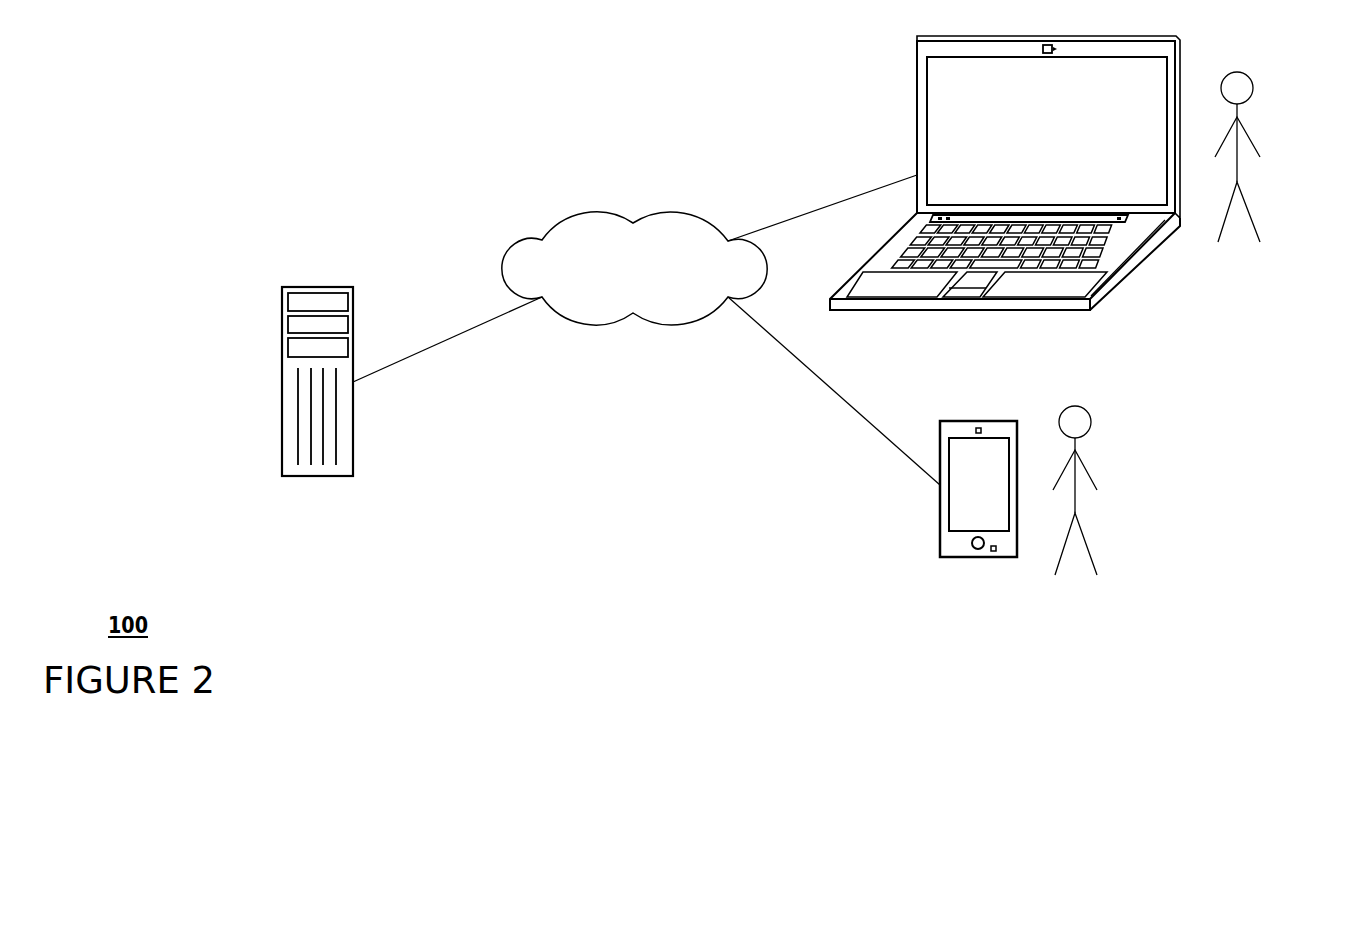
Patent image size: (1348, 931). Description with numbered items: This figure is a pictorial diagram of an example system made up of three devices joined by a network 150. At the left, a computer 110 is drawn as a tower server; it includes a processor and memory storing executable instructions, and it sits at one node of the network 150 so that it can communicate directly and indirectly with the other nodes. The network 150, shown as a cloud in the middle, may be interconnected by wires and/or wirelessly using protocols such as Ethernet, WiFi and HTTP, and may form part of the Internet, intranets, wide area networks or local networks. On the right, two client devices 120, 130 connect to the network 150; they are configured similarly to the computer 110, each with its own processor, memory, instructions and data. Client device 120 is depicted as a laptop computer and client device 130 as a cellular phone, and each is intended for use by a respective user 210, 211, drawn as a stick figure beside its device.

The computer 110 is at (282, 380).
The client device 120 is at (917, 83).
The client device 130 is at (940, 537).
The network 150 is at (545, 233).
The user 210 is at (1237, 162).
The user 211 is at (1077, 495).